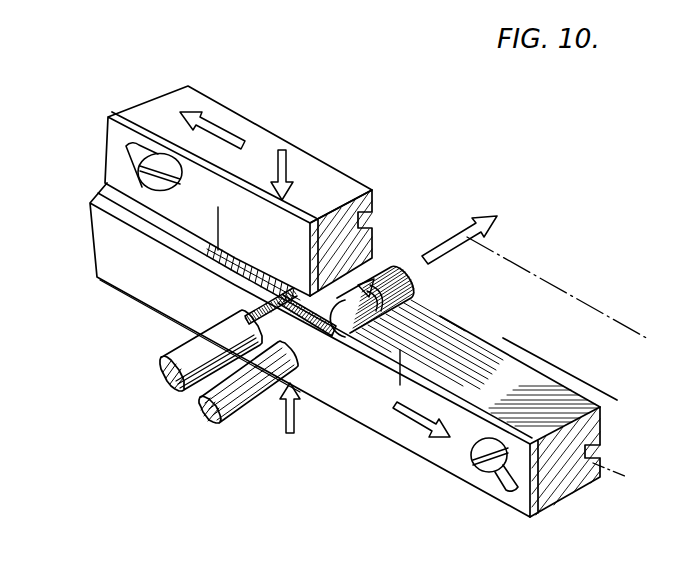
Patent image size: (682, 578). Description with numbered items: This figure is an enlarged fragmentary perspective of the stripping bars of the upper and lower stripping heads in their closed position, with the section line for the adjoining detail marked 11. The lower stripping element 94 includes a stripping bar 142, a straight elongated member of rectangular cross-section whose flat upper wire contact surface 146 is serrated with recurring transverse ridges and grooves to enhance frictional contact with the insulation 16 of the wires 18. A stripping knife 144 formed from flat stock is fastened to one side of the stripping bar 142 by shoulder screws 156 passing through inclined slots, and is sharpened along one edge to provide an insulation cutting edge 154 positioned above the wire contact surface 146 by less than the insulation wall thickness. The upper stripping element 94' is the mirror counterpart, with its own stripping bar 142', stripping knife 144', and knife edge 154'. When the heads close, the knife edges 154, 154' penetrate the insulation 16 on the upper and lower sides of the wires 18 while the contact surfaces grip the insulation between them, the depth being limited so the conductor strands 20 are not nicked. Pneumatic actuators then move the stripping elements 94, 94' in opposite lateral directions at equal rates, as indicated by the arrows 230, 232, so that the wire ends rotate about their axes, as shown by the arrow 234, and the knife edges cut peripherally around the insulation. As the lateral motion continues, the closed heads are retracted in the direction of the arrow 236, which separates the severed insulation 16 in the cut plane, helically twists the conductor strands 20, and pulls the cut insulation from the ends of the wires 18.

The upper stripping element 94' is at (238, 191).
The stripping element 94 is at (353, 350).
The upper stripping bar 142' is at (375, 225).
The stripping bar 142 is at (580, 469).
The upper knife edge 154' is at (109, 164).
The insulation cutting edge 154 is at (566, 402).
The shoulder screws 156 is at (485, 472).
The upper stripping knife 144' is at (284, 315).
The stripping knife 144 is at (177, 336).
The wire contact surface 146 is at (439, 338).
The insulation 16 is at (412, 291).
The wires 18 is at (196, 412).
The conductor strands 20 is at (262, 294).
The arrow 232 is at (222, 131).
The arrow 230 is at (414, 428).
The arrow 234 is at (400, 272).
The arrow 236 is at (470, 230).
The section line indicator 11 is at (398, 383).